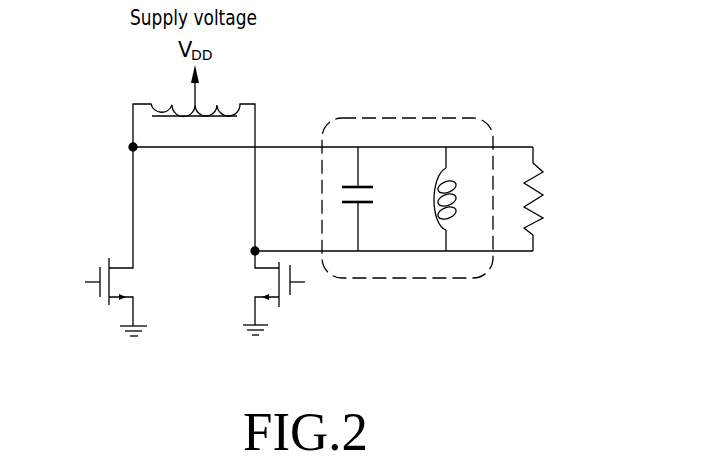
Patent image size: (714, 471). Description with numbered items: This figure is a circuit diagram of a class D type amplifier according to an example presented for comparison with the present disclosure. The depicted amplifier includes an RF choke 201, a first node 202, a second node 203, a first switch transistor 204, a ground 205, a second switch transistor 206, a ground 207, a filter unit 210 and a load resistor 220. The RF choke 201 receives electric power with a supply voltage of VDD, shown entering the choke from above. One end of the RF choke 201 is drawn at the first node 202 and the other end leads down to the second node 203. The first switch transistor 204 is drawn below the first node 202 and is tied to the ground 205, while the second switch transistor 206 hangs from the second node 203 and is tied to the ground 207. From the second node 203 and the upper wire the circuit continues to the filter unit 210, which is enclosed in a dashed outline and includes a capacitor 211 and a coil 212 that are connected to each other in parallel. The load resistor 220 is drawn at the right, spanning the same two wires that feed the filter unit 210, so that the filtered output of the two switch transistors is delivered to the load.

The RF choke 201 is at (217, 105).
The first node 202 is at (133, 147).
The second node 203 is at (254, 251).
The first switch transistor 204 is at (97, 293).
The ground 205 is at (140, 335).
The second switch transistor 206 is at (295, 295).
The ground 207 is at (262, 335).
The filter unit 210 is at (405, 118).
The capacitor 211 is at (373, 203).
The coil 212 is at (455, 213).
The load resistor 220 is at (543, 217).